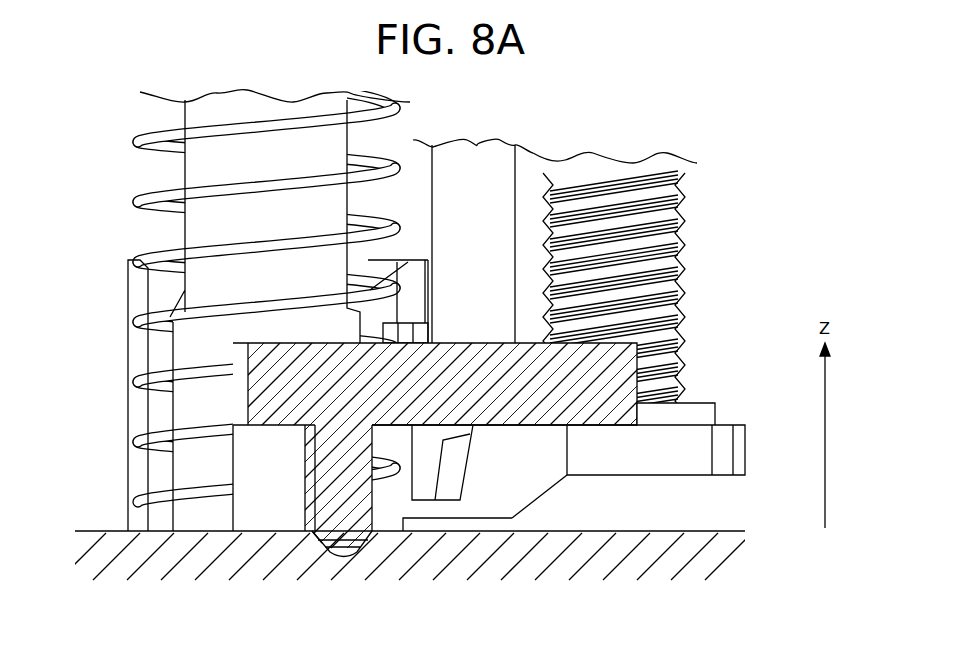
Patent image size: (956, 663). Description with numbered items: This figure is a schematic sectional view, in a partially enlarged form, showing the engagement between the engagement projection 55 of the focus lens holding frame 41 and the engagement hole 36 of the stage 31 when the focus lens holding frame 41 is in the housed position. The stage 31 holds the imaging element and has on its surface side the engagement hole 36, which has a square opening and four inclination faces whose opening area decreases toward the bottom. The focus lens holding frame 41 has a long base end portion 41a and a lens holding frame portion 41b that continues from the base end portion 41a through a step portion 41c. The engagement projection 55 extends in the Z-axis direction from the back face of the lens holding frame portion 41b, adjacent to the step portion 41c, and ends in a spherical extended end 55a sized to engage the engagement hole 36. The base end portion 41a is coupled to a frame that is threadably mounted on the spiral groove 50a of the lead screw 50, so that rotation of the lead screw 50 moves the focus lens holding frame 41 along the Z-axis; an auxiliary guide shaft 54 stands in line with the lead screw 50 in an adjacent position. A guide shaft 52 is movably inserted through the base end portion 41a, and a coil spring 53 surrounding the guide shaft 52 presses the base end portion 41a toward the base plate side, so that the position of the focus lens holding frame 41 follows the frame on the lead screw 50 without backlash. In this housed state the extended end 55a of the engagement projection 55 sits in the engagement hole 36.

The stage 31 is at (155, 547).
The engagement hole 36 is at (322, 543).
The focus lens holding frame 41 is at (574, 451).
The base end portion 41a is at (162, 475).
The lens holding frame portion 41b is at (512, 430).
The step portion 41c is at (537, 476).
The lead screw 50 is at (644, 285).
The spiral groove 50a is at (617, 250).
The guide shaft 52 is at (217, 167).
The coil spring 53 is at (140, 202).
The auxiliary guide shaft 54 is at (470, 197).
The engagement projection 55 is at (382, 491).
The extended end 55a is at (340, 557).